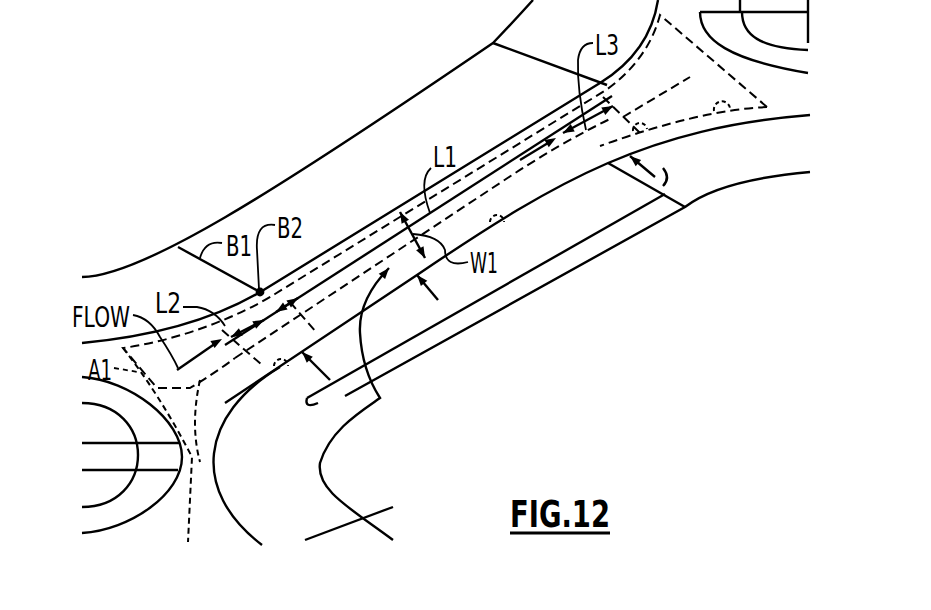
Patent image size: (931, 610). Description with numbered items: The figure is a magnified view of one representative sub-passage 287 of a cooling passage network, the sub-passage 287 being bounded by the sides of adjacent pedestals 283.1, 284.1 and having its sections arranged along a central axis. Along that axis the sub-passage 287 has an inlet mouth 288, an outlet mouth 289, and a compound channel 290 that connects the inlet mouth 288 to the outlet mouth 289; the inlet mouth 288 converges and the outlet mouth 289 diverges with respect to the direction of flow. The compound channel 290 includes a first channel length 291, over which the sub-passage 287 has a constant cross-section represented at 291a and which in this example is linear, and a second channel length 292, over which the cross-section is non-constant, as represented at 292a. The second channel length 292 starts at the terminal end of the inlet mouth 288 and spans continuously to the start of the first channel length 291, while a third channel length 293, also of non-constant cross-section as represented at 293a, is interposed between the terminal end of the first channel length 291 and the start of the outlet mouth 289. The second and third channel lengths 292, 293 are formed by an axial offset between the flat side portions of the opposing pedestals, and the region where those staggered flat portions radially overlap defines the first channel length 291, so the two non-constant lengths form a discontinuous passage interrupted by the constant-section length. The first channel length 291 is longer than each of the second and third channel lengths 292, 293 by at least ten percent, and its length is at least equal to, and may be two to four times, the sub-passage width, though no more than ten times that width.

The outer wall surface 283.1 is at (157, 231).
The non-constant cross-section 292a is at (222, 298).
The constant cross-section 291a is at (357, 226).
The non-constant cross-section 293a is at (566, 101).
The second channel length 292 is at (284, 373).
The first channel length 291 is at (500, 214).
The third channel length 293 is at (668, 128).
The outlet mouth 289 is at (735, 110).
The compound channel 290 is at (488, 295).
The sub-passage 287 is at (380, 398).
The inlet mouth 288 is at (187, 543).
The vane body 284.1 is at (378, 535).